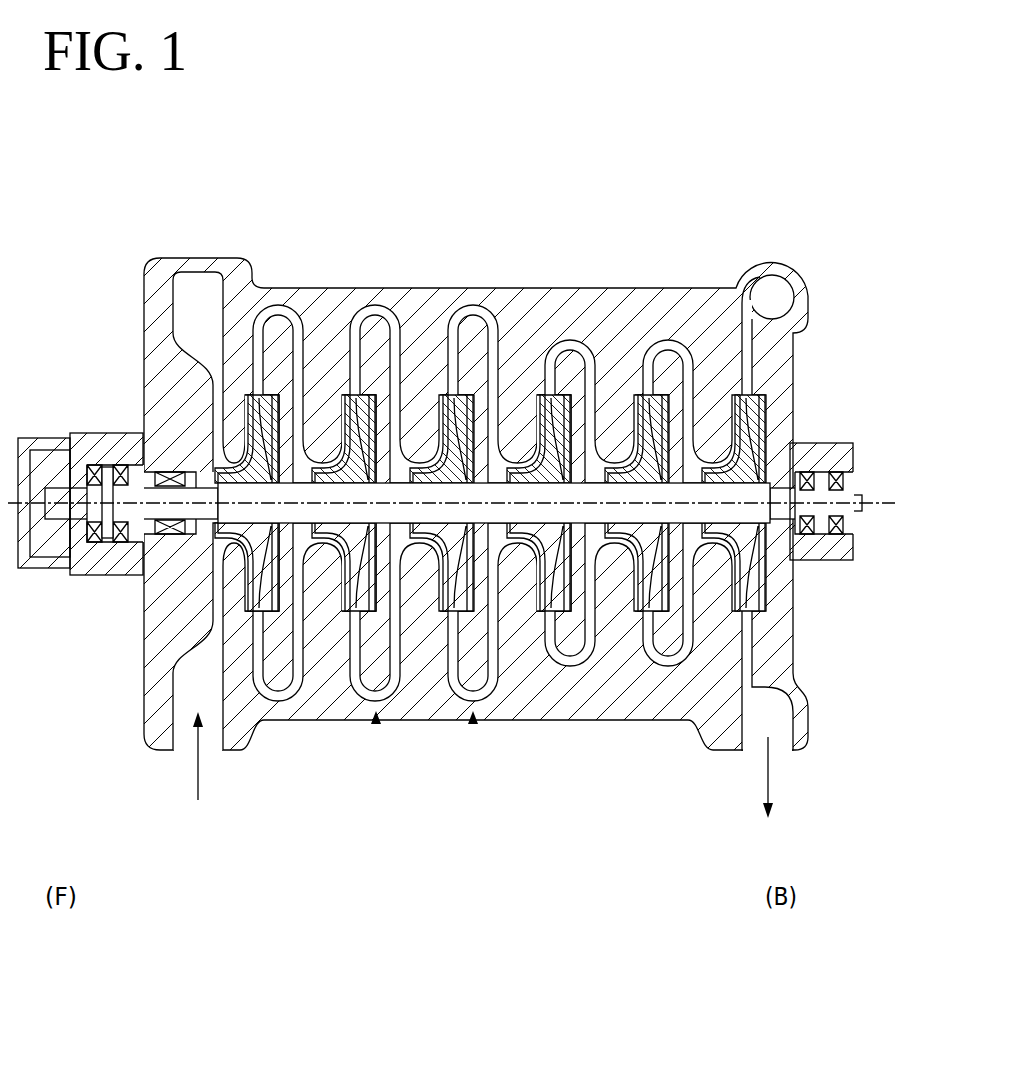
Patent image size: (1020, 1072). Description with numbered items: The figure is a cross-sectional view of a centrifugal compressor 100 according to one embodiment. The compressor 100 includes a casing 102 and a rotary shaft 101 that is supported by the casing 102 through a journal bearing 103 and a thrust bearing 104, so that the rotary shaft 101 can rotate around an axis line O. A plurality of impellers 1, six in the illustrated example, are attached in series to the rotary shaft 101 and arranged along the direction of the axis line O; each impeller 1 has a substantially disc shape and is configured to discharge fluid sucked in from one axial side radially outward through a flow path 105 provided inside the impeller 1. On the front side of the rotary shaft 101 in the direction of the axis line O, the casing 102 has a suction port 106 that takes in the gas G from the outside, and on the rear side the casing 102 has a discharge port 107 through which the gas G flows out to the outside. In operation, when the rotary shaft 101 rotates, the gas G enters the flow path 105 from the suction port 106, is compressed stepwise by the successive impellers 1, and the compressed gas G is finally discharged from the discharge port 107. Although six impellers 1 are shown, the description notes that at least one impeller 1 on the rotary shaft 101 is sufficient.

The centrifugal compressor 100 is at (770, 151).
The impeller 1 is at (433, 437).
The rotary shaft 101 is at (770, 548).
The casing 102 is at (678, 300).
The journal bearing 103 is at (162, 470).
The thrust bearing 104 is at (48, 438).
The flow path 105 is at (376, 726).
The suction port 106 is at (185, 752).
The discharge port 107 is at (777, 738).
The gas G is at (205, 770).
The axis line O is at (884, 497).